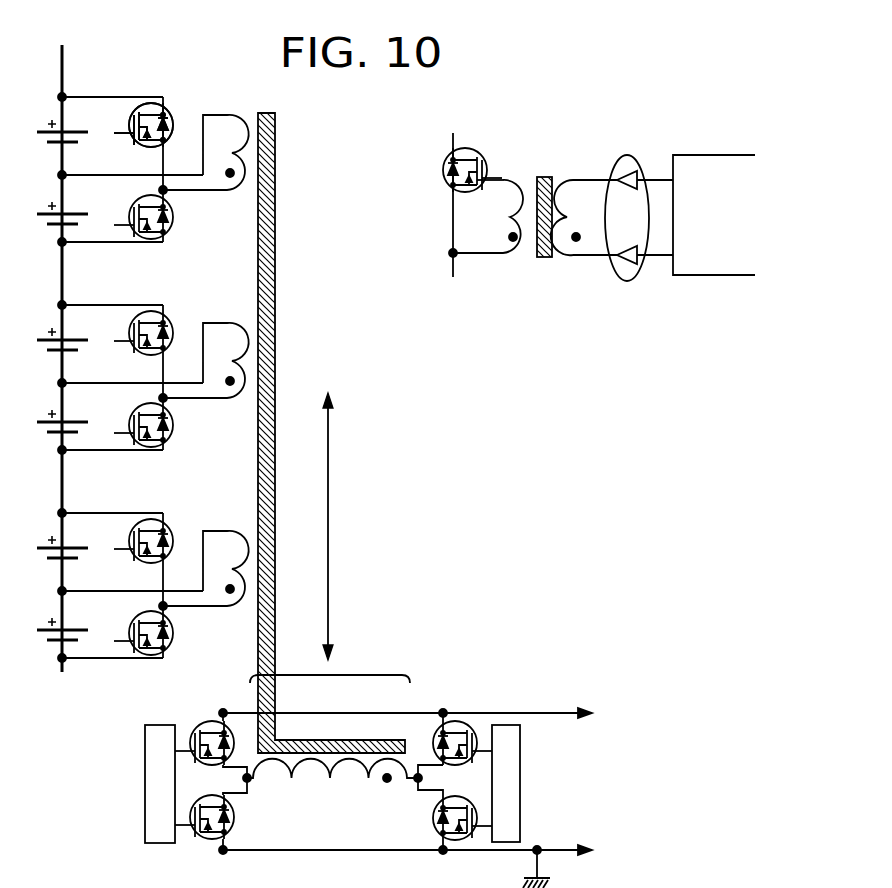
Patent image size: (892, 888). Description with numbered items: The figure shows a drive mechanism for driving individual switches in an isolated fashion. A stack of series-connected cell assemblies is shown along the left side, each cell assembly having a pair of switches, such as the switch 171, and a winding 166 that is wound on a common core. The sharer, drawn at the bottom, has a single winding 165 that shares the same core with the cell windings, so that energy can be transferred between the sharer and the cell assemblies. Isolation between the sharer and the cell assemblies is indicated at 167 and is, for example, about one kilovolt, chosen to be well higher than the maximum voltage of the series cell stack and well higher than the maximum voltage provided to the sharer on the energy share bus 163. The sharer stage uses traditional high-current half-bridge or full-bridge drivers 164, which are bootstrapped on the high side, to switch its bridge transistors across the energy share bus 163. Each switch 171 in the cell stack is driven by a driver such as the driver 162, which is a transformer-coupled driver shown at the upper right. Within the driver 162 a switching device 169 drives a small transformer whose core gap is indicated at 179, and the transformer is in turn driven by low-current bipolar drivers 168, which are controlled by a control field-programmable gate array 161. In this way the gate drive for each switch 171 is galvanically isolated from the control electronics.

The control field-programmable gate array 161 is at (697, 155).
The driver 162 is at (543, 101).
The energy share bus 163 is at (424, 798).
The half-bridge/full-bridge drivers 164 is at (332, 784).
The single winding 165 is at (334, 672).
The winding 166 is at (302, 123).
The isolation 167 is at (533, 268).
The low-current bipolar drivers 168 is at (627, 281).
The switch 169 is at (446, 170).
The switch 171 is at (167, 109).
The core gap 179 is at (546, 173).